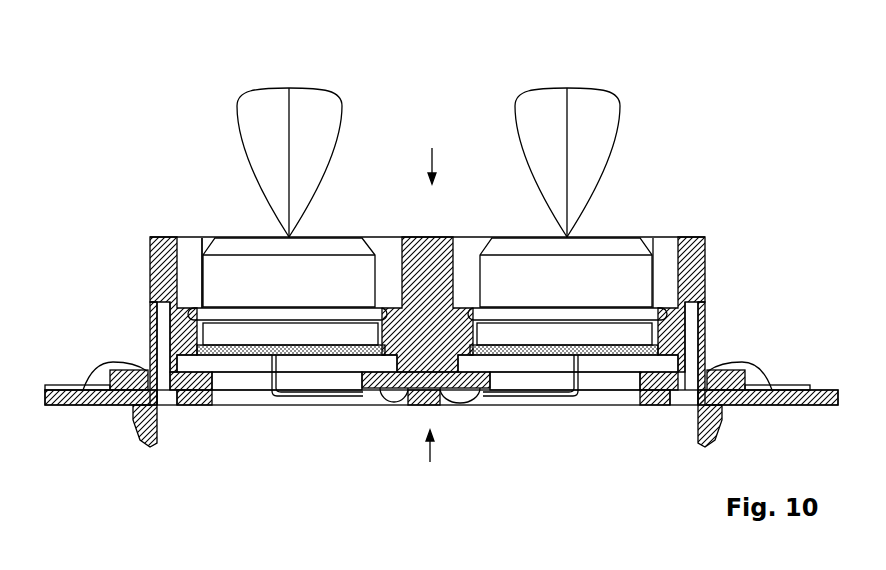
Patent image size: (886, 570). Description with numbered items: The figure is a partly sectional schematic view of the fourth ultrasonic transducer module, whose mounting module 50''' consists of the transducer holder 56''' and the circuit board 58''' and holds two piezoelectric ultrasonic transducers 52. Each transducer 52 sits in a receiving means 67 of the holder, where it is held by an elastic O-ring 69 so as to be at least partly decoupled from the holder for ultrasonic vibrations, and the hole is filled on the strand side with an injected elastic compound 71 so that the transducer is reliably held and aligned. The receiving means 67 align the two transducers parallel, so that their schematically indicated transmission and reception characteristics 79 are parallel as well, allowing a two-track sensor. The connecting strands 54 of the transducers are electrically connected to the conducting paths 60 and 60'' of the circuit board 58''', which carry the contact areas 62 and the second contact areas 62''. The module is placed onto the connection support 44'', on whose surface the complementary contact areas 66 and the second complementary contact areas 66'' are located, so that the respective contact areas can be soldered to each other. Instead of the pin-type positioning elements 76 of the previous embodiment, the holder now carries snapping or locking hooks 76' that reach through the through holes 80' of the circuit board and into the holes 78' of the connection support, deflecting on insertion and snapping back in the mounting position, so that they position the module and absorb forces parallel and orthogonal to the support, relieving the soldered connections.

The transmission and reception characteristics 79 is at (527, 102).
The elastic O-ring 69 is at (198, 308).
The receiving means 67 is at (462, 269).
The ultrasonic transducer 52 is at (427, 272).
The transducer holder 56''' is at (139, 296).
The elastic compound 71 is at (197, 326).
The complementary contact areas 66 is at (67, 354).
The contact areas 62 is at (112, 354).
The connection support 44'' is at (433, 421).
The snapping or locking hooks 76' is at (131, 391).
The through holes 80' is at (427, 402).
The holes 78' is at (427, 447).
The circuit board 58''' is at (220, 417).
The conducting paths 60 is at (287, 409).
The connecting strands 54 is at (310, 396).
The conducting paths 60'' is at (565, 409).
The second complementary contact areas 66'' is at (777, 354).
The second contact areas 62'' is at (739, 359).
The positioning elements 76 is at (732, 385).
The mounting module 50''' is at (745, 231).